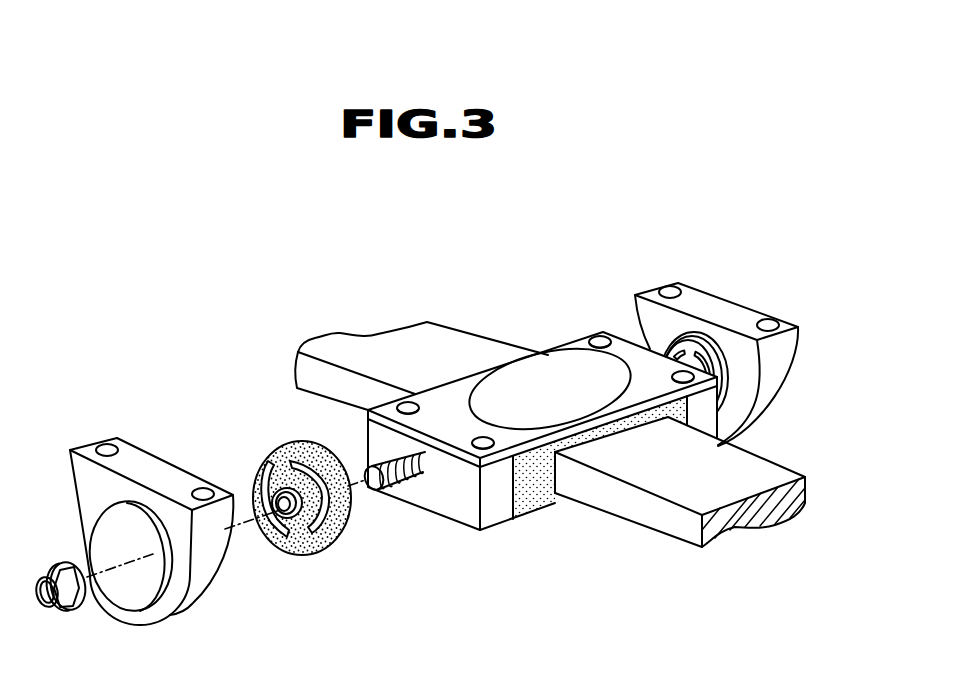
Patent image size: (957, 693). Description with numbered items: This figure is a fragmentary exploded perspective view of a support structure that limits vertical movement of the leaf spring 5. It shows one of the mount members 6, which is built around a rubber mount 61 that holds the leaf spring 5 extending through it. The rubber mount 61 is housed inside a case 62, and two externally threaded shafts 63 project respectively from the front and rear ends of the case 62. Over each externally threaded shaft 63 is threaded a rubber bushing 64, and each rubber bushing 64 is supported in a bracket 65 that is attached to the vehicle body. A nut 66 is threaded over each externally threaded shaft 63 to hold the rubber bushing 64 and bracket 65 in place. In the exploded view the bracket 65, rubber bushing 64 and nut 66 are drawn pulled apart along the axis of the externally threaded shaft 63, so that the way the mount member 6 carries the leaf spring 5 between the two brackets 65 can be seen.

The leaf spring 5 is at (411, 360).
The mount member 6 is at (432, 426).
The rubber mount 61 is at (540, 500).
The case 62 is at (582, 342).
The externally threaded shaft 63 is at (393, 483).
The rubber bushing 64 is at (308, 555).
The bracket 65 is at (188, 597).
The nut 66 is at (67, 608).